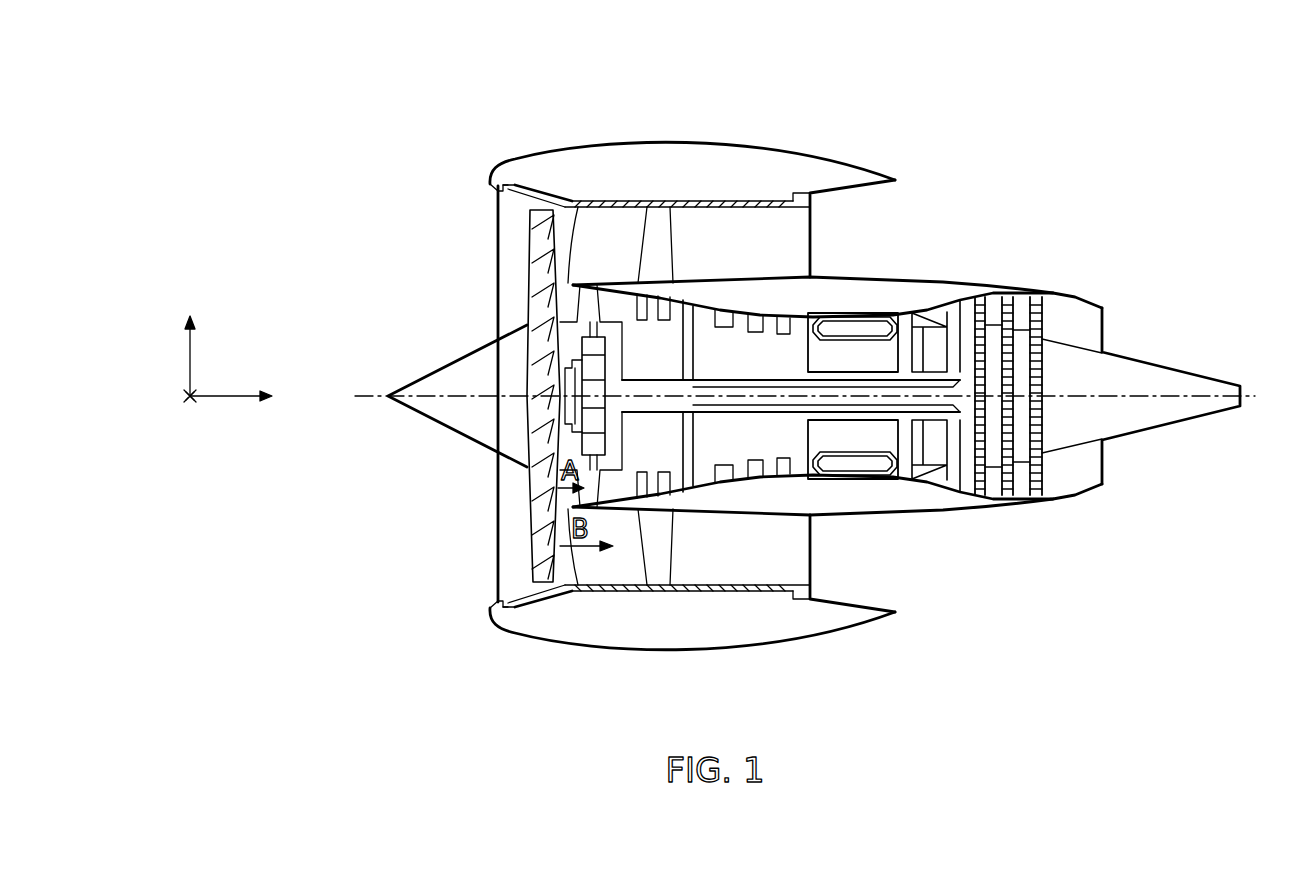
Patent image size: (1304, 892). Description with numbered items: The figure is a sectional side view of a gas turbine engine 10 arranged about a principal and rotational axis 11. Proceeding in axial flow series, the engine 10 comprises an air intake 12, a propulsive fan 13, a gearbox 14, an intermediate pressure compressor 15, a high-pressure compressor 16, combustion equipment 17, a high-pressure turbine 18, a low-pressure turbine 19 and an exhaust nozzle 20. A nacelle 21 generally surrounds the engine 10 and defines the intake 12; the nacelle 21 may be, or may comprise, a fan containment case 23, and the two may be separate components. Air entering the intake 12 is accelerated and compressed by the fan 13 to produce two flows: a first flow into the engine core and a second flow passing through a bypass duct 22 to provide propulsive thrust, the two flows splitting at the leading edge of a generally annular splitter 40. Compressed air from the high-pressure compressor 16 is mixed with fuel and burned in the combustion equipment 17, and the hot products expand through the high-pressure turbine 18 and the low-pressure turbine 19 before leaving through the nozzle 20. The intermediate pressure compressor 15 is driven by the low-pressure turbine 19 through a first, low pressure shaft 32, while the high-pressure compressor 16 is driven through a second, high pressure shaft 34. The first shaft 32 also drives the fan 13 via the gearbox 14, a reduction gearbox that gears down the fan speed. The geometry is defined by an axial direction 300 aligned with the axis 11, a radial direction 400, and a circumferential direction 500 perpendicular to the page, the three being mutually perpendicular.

The gas turbine engine 10 is at (1120, 193).
The principal and rotational axis 11 is at (372, 396).
The air intake 12 is at (472, 240).
The propulsive fan 13 is at (540, 532).
The gearbox 14 is at (603, 462).
The intermediate pressure compressor 15 is at (663, 280).
The high-pressure compressor 16 is at (793, 350).
The combustion equipment 17 is at (853, 477).
The high-pressure turbine 18 is at (957, 325).
The low-pressure turbine 19 is at (1007, 300).
The exhaust nozzle 20 is at (1090, 332).
The nacelle 21 is at (762, 147).
The bypass duct 22 is at (783, 228).
The fan containment case 23 is at (538, 187).
The first shaft 32 is at (923, 393).
The second shaft 34 is at (847, 377).
The annular splitter 40 is at (587, 200).
The axial direction 300 is at (253, 398).
The radial direction 400 is at (192, 340).
The circumferential direction 500 is at (192, 412).